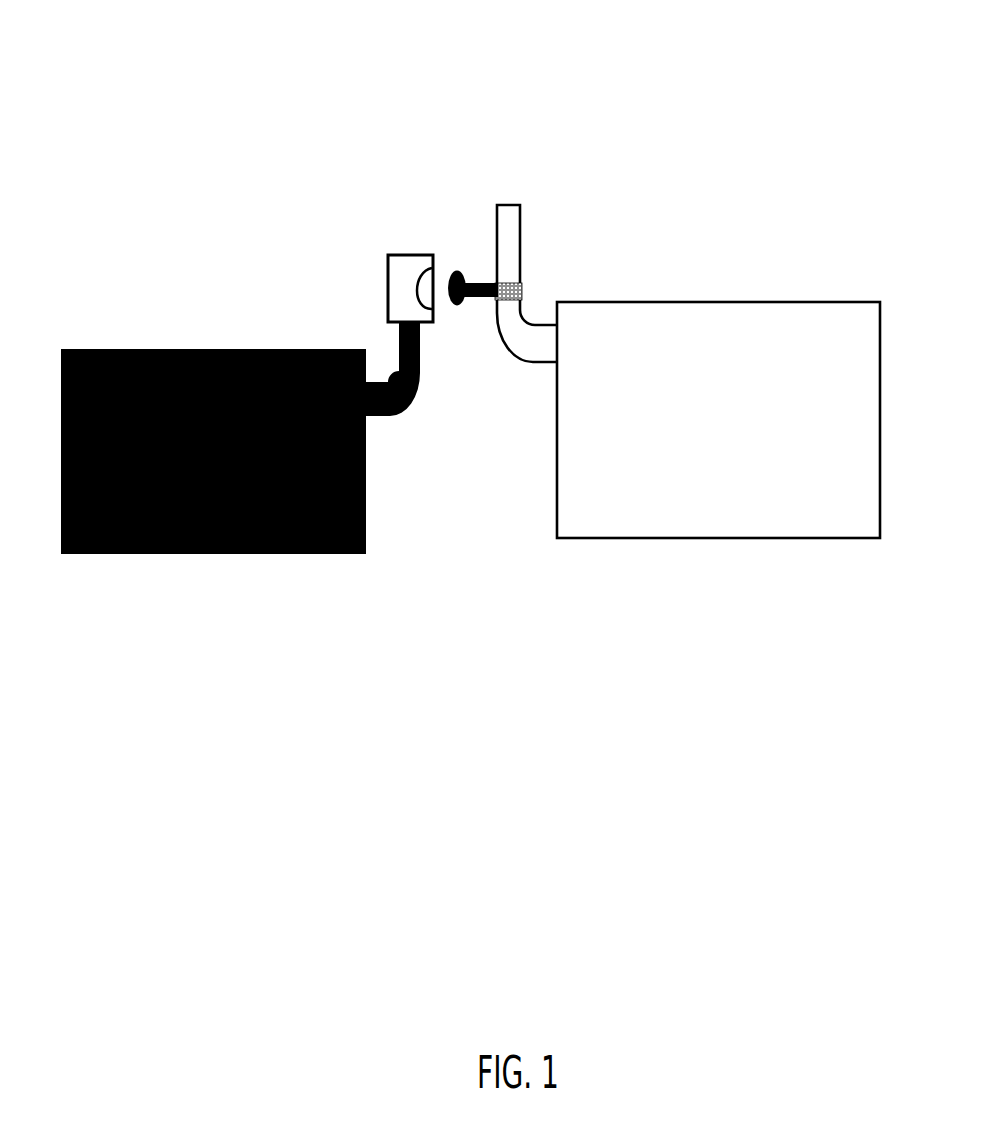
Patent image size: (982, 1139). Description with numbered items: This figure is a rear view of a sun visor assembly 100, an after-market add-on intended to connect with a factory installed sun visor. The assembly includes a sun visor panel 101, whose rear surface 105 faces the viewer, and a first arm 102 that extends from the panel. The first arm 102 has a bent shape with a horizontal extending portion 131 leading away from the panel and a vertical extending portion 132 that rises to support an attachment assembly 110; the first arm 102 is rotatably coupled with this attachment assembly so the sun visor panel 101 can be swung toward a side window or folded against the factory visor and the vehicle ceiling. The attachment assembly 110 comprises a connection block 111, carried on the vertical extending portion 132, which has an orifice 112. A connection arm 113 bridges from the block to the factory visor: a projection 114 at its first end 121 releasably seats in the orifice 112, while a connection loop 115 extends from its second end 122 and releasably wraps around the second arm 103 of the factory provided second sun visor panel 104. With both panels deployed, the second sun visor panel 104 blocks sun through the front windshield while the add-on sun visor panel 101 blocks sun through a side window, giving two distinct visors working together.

The sun visor assembly 100 is at (128, 97).
The sun visor panel 101 is at (107, 349).
The first arm 102 is at (416, 453).
The second arm 103 is at (520, 228).
The second sun visor panel 104 is at (733, 302).
The rear surface 105 is at (731, 452).
The attachment assembly 110 is at (422, 131).
The connection block 111 is at (389, 280).
The orifice 112 is at (411, 261).
The connection arm 113 is at (477, 322).
The projection 114 is at (455, 273).
The connection loop 115 is at (520, 287).
The first end 121 is at (467, 282).
The second end 122 is at (489, 282).
The horizontal extending portion 131 is at (383, 418).
The vertical extending portion 132 is at (418, 372).